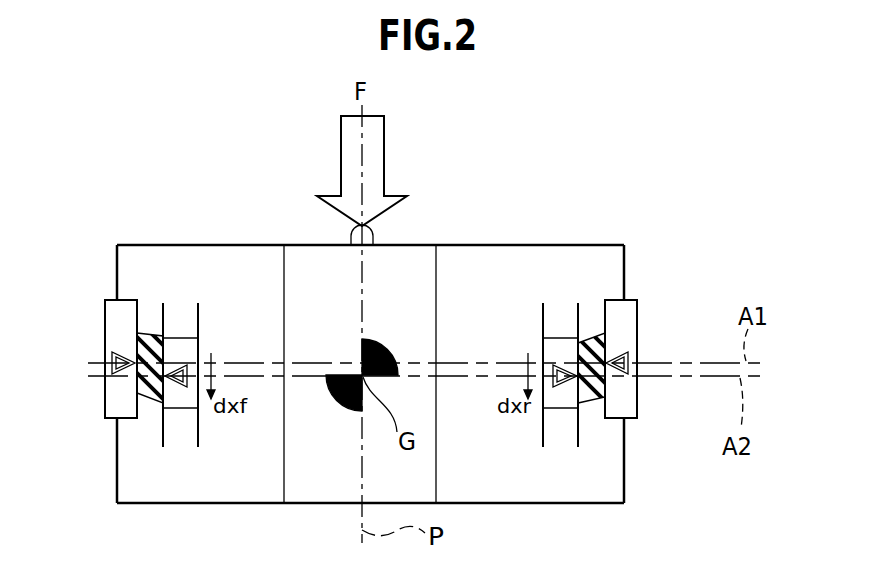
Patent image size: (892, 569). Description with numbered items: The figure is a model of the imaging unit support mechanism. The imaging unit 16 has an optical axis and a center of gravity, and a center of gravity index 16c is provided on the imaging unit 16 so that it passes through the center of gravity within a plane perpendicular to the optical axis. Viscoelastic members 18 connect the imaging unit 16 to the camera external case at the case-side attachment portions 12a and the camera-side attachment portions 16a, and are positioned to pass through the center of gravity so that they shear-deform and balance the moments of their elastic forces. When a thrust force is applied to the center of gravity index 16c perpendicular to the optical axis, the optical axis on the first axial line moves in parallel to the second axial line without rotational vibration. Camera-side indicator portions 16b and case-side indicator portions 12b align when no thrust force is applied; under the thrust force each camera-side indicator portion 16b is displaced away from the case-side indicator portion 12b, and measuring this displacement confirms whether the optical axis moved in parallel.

The case-side attachment portion 12a is at (115, 320).
The case-side indicator portion 12b is at (110, 357).
The imaging unit 16 is at (500, 273).
The camera-side attachment portion 16a is at (180, 400).
The camera-side indicator portion 16b is at (182, 372).
The center of gravity index 16c is at (373, 239).
The viscoelastic member 18 is at (150, 333).